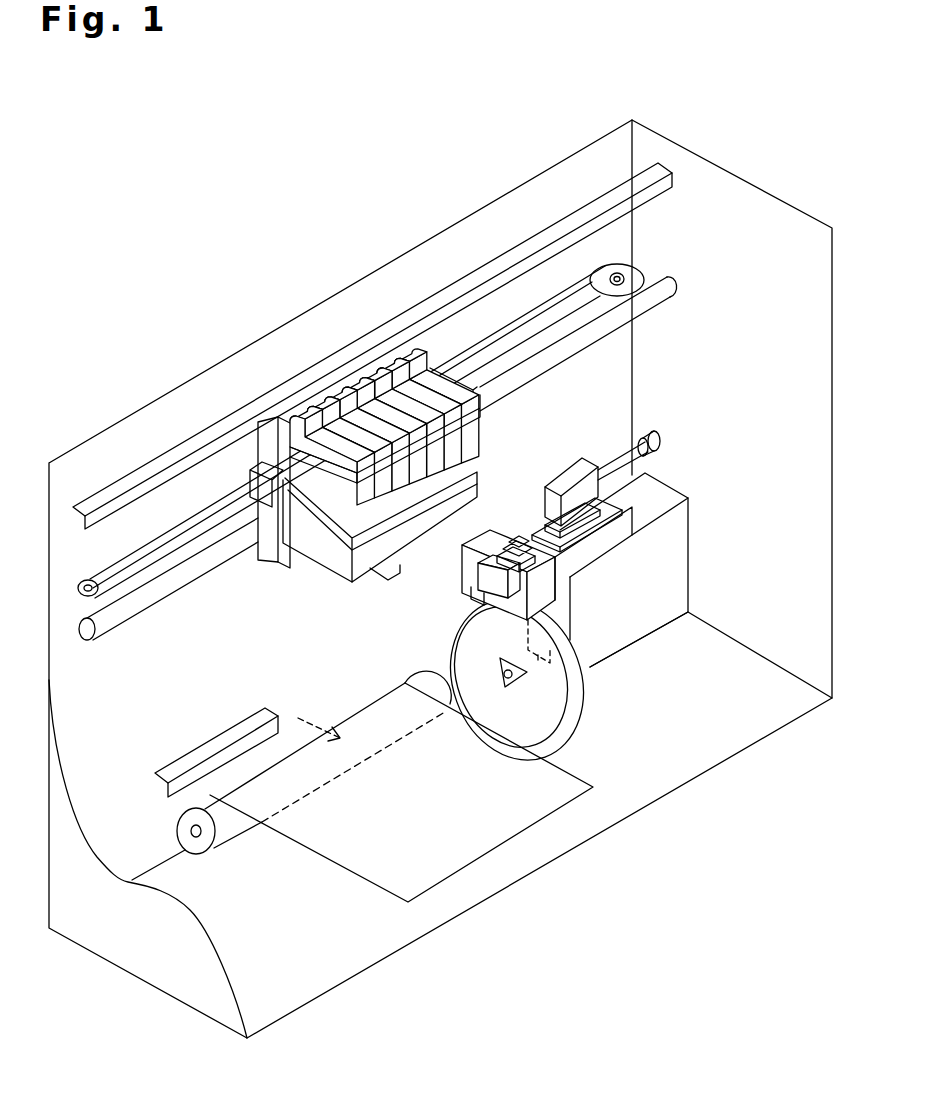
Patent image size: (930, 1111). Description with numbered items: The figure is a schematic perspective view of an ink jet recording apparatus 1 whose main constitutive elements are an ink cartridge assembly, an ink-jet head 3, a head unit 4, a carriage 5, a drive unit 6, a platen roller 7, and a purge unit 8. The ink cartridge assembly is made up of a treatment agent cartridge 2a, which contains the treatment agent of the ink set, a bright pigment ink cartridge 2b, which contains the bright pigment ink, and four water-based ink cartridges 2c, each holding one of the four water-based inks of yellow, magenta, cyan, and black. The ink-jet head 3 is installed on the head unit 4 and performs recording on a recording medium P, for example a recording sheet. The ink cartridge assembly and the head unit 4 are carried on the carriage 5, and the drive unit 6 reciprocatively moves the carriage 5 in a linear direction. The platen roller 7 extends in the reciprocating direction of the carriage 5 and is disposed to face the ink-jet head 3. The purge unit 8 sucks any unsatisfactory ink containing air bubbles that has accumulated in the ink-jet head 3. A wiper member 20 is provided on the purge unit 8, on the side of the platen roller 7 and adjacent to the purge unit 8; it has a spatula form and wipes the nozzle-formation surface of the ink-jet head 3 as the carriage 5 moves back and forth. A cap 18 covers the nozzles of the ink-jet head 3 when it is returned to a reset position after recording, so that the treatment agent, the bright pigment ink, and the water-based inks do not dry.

The ink jet recording apparatus 1 is at (333, 154).
The treatment agent cartridge 2a is at (312, 417).
The bright pigment ink cartridge 2b is at (333, 407).
The water-based ink cartridges 2c is at (418, 332).
The ink-jet head 3 is at (425, 553).
The head unit 4 is at (400, 577).
The carriage 5 is at (267, 440).
The drive unit 6 is at (658, 148).
The platen roller 7 is at (232, 822).
The purge unit 8 is at (747, 598).
The cap 18 is at (587, 510).
The wiper member 20 is at (495, 585).
The recording medium P is at (397, 876).